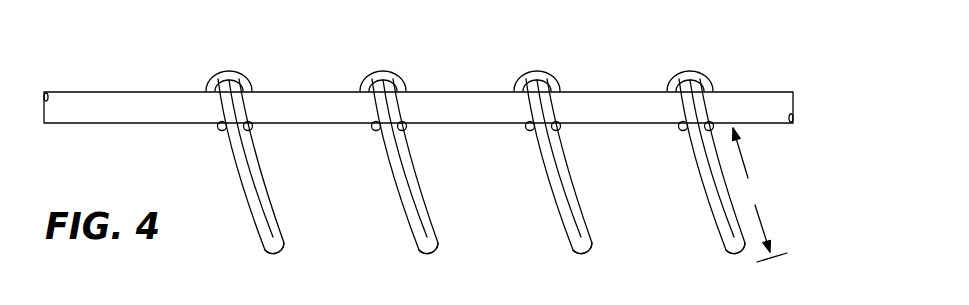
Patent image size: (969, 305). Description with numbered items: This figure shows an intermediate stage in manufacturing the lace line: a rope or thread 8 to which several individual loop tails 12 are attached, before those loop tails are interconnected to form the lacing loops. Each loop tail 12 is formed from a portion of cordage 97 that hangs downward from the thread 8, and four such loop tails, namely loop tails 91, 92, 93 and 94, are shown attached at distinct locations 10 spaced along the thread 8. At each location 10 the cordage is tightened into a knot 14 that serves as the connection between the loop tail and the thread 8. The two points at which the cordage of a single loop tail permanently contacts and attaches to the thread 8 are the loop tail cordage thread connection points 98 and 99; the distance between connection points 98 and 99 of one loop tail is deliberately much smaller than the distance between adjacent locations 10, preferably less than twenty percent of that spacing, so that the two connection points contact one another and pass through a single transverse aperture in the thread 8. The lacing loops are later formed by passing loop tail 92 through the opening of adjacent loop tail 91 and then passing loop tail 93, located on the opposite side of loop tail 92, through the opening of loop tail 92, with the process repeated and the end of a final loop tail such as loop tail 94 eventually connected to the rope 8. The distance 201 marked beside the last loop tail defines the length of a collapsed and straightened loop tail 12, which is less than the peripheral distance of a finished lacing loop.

The rope and/or thread 8 is at (85, 92).
The distinct locations along the thread 10 is at (440, 68).
The knot 14 is at (471, 66).
The loop tail cordage thread connection point 98 is at (429, 99).
The loop tail cordage thread connection point 99 is at (495, 98).
The cordage 97 is at (481, 158).
The second distinct loop tail 91 is at (249, 166).
The first distinct loop tail 92 is at (403, 166).
The another distinct loop tail 93 is at (557, 166).
The loop tail 94 is at (710, 166).
The loop tail 12 is at (524, 264).
The collapsed loop tail length 201 is at (760, 195).